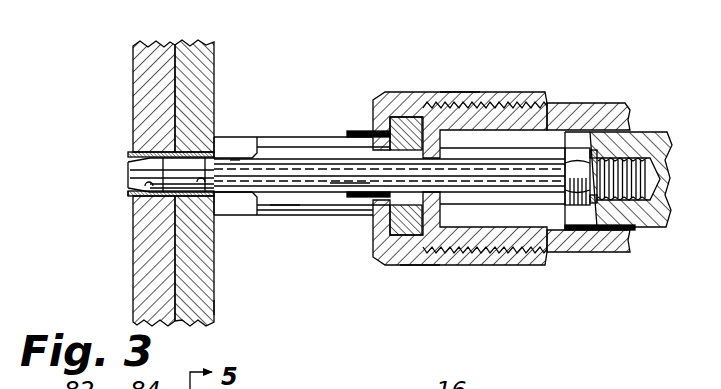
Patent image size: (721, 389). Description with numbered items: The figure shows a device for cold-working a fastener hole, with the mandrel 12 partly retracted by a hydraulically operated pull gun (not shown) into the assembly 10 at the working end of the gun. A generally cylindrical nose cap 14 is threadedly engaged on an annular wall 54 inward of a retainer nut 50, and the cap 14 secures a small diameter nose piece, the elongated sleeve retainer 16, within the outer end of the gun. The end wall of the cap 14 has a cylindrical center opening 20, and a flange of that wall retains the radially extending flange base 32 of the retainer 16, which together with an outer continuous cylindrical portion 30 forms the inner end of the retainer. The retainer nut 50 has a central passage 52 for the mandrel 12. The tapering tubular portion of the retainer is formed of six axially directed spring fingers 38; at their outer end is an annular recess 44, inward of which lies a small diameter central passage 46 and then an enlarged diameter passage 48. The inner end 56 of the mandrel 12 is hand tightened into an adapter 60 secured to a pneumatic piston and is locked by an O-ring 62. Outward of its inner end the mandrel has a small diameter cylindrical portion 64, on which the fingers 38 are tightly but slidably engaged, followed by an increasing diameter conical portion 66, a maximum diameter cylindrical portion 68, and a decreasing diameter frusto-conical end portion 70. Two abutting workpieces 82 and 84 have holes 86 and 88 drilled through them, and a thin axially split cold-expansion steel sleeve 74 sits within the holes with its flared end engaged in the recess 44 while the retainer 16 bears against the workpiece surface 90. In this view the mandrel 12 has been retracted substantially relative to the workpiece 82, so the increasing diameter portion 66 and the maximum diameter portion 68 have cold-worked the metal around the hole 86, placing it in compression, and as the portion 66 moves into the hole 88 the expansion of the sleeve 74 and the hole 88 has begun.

The fitting assembly 10 is at (459, 89).
The mandrel 12 is at (307, 168).
The nose cap 14 is at (417, 269).
The sleeve retainer 16 is at (271, 122).
The center opening 20 is at (372, 132).
The outer cylindrical portion 30 is at (378, 223).
The flange base 32 is at (410, 118).
The spring fingers 38 is at (262, 208).
The annular recess 44 is at (203, 133).
The central passage 46 is at (236, 158).
The enlarged diameter passage 48 is at (285, 198).
The retainer nut 50 is at (478, 118).
The central passage 52 is at (435, 193).
The annular wall 54 is at (588, 113).
The inner end 56 is at (648, 226).
The adapter 60 is at (650, 140).
The O-ring 62 is at (597, 206).
The small diameter cylindrical portion 64 is at (350, 184).
The increasing diameter conical portion 66 is at (172, 200).
The maximum diameter cylindrical portion 68 is at (140, 162).
The frusto-conical end portion 70 is at (140, 173).
The cold-expansion sleeve 74 is at (127, 197).
The workpiece 82 is at (144, 53).
The workpiece 84 is at (193, 50).
The hole 86 is at (157, 193).
The hole 88 is at (221, 205).
The workpiece surface 90 is at (216, 307).